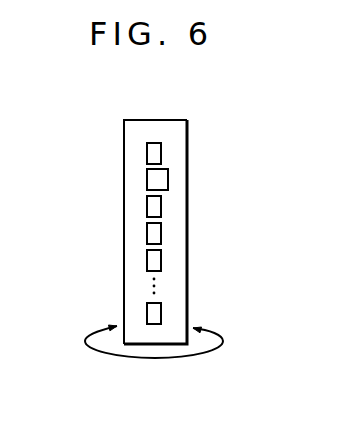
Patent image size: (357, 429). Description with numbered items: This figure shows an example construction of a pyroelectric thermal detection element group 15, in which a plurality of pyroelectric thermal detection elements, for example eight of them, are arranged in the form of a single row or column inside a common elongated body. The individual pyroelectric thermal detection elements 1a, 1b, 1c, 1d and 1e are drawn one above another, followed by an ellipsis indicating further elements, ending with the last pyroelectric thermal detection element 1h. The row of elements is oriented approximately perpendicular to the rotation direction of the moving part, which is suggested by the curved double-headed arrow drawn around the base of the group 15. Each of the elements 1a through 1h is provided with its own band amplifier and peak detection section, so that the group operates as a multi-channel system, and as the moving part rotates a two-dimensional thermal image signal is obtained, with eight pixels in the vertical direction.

The pyroelectric thermal detection element group 15 is at (124, 138).
The pyroelectric thermal detection element 1a is at (161, 148).
The pyroelectric thermal detection element 1b is at (161, 175).
The pyroelectric thermal detection element 1c is at (161, 203).
The pyroelectric thermal detection element 1d is at (161, 233).
The pyroelectric thermal detection element 1e is at (161, 262).
The pyroelectric thermal detection element 1h is at (161, 312).